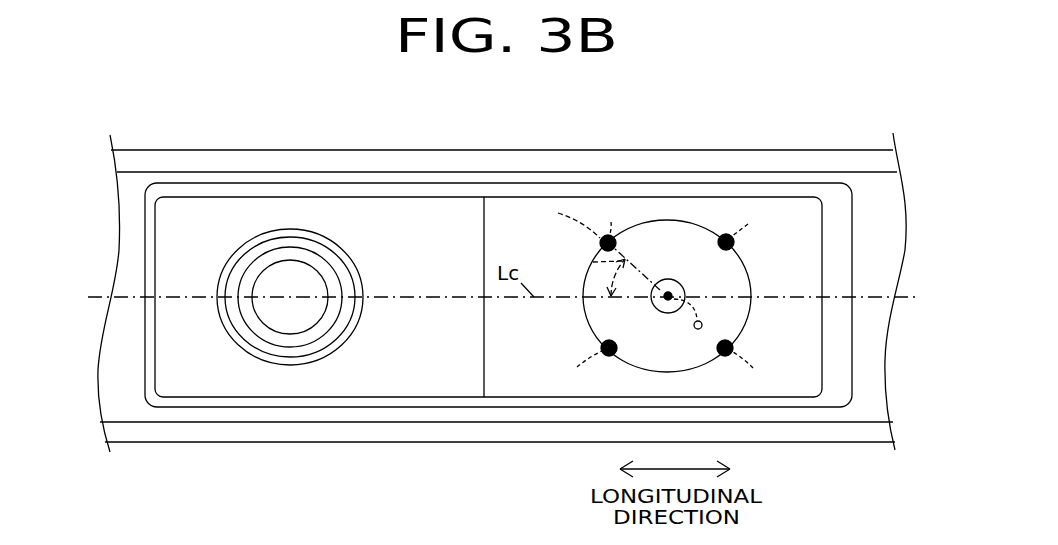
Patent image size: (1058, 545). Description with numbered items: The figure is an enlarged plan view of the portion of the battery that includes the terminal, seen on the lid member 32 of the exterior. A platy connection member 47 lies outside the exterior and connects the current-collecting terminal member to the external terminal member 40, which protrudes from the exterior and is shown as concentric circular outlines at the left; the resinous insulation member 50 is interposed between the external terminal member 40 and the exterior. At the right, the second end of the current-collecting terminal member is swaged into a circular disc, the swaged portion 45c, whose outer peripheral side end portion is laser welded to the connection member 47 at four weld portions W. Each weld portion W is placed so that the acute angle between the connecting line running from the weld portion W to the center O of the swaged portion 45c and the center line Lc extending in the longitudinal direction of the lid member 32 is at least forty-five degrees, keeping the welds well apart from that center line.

The lid member 32 is at (131, 237).
The external terminal member 40 is at (283, 282).
The connection member 47 is at (425, 235).
The swaged portion 45c is at (667, 238).
The insulation member 50 is at (837, 265).